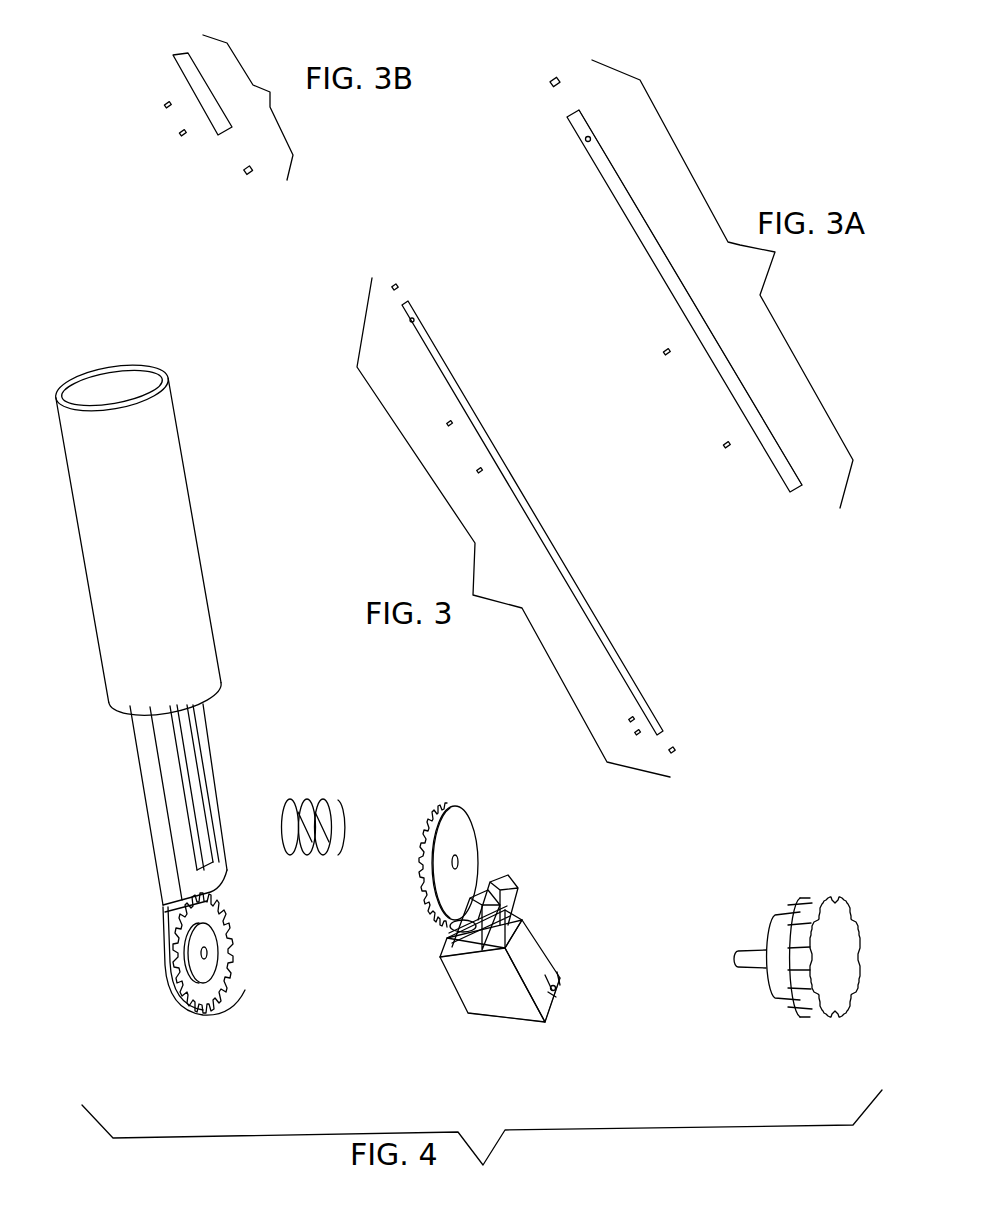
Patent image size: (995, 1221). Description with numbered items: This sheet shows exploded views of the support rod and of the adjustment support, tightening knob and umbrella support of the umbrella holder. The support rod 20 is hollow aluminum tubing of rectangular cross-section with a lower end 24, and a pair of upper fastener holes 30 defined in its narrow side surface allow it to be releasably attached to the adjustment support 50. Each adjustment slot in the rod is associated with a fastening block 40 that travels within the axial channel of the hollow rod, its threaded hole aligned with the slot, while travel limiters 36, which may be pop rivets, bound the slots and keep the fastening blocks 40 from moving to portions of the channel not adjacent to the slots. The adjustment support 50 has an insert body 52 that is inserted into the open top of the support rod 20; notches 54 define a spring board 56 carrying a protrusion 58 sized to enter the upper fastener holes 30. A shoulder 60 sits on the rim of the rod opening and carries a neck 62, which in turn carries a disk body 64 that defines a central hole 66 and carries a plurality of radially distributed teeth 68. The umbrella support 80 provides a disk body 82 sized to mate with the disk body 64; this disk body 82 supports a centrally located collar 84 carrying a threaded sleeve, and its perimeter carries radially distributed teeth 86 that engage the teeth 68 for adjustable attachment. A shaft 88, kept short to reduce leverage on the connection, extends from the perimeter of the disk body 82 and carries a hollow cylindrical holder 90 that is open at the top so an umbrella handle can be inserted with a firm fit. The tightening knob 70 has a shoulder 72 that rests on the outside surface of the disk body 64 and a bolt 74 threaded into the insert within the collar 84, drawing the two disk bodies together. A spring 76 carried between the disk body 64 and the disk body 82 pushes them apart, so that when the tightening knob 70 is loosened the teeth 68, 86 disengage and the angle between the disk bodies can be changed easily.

In FIG. 3A, the support rod 20 is at (645, 270).
In FIG. 3, the support rod 20 is at (558, 535).
In FIG. 3B, the lower end 24 is at (203, 88).
In FIG. 3A, the upper fastener holes 30 is at (587, 142).
In FIG. 3A, the travel limiters 36 is at (662, 357).
In FIG. 3B, the fastening block 40 is at (240, 175).
In FIG. 3A, the fastening block 40 is at (550, 85).
In FIG. 4, the adjustment support 50 is at (453, 992).
In FIG. 4, the insert body 52 is at (508, 997).
In FIG. 4, the notches 54 is at (557, 1003).
In FIG. 4, the spring board 56 is at (563, 995).
In FIG. 4, the protrusion 58 is at (552, 973).
In FIG. 4, the shoulder 60 is at (520, 937).
In FIG. 4, the neck 62 is at (510, 955).
In FIG. 4, the disk body 64 is at (455, 805).
In FIG. 4, the central hole 66 is at (460, 860).
In FIG. 4, the teeth 68 is at (410, 848).
In FIG. 4, the tightening knob 70 is at (873, 925).
In FIG. 4, the shoulder 72 is at (778, 937).
In FIG. 4, the bolt 74 is at (745, 970).
In FIG. 4, the spring 76 is at (322, 860).
In FIG. 4, the umbrella support 80 is at (225, 523).
In FIG. 4, the disk body 82 is at (170, 995).
In FIG. 4, the collar 84 is at (193, 950).
In FIG. 4, the teeth 86 is at (182, 962).
In FIG. 4, the shaft 88 is at (208, 743).
In FIG. 4, the cylindrical holder 90 is at (183, 443).